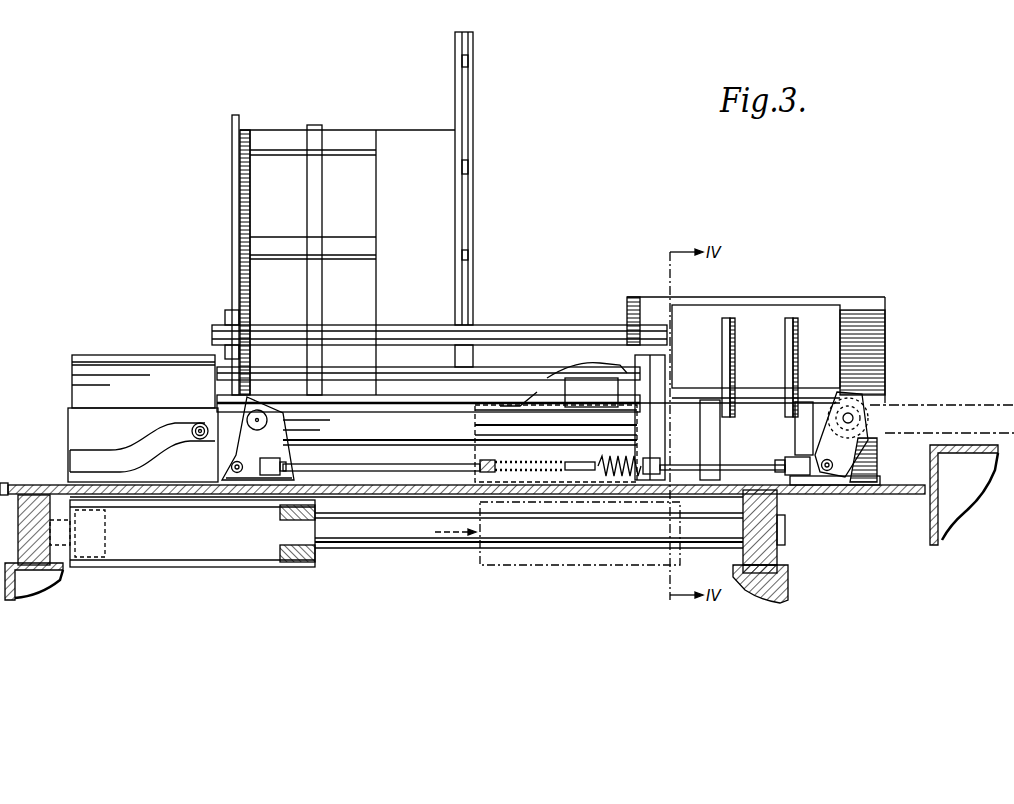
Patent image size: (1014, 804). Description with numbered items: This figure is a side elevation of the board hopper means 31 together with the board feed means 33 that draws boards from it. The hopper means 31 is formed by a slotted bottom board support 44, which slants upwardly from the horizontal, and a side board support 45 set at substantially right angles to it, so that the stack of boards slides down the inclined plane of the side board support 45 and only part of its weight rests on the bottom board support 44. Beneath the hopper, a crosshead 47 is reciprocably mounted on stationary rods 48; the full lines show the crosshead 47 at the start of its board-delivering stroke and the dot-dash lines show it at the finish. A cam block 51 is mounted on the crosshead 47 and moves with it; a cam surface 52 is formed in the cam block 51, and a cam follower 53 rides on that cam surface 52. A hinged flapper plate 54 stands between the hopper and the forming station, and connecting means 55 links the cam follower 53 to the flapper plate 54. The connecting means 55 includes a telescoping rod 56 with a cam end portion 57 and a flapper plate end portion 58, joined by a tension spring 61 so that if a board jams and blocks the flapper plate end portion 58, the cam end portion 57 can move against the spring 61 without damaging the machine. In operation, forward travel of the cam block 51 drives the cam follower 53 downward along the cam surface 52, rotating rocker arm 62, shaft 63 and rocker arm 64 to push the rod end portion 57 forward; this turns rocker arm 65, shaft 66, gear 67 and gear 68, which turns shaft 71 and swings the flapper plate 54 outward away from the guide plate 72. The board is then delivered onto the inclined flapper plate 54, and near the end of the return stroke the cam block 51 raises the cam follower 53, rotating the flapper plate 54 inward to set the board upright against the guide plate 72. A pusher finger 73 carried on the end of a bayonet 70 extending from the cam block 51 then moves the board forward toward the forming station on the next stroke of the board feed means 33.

The board hopper means 31 is at (365, 98).
The board feed means 33 is at (607, 270).
The bottom board support 44 is at (515, 340).
The side board support 45 is at (442, 207).
The crosshead 47 is at (217, 566).
The stationary rods 48 is at (367, 537).
The cam block 51 is at (75, 425).
The cam surface 52 is at (90, 456).
The cam follower 53 is at (194, 424).
The hinged flapper plate 54 is at (760, 322).
The connecting means 55 is at (545, 578).
The telescoping rod 56 is at (430, 478).
The cam end portion 57 is at (371, 468).
The flapper plate end portion 58 is at (778, 470).
The tension spring 61 is at (590, 458).
The rocker arm 62 is at (228, 418).
The shaft 63 is at (255, 422).
The rocker arm 64 is at (240, 455).
The rocker arm 65 is at (872, 447).
The shaft 66 is at (850, 416).
The gear 67 is at (848, 395).
The gear 68 is at (829, 455).
The bayonet 70 is at (460, 430).
The shaft 71 is at (800, 412).
The guide plate 72 is at (850, 306).
The pusher finger 73 is at (583, 378).